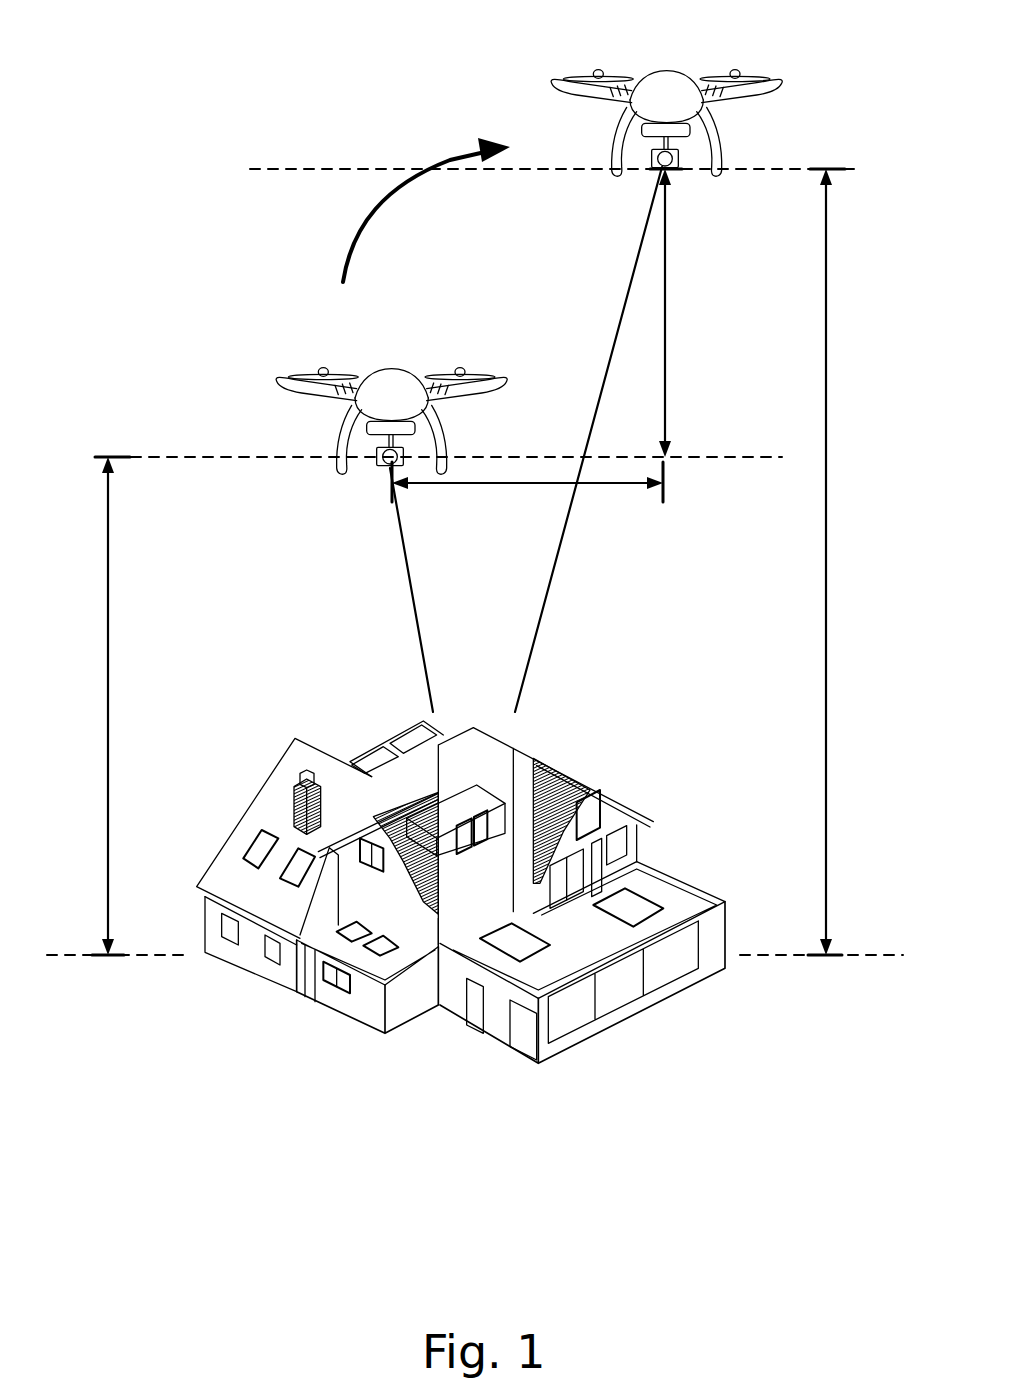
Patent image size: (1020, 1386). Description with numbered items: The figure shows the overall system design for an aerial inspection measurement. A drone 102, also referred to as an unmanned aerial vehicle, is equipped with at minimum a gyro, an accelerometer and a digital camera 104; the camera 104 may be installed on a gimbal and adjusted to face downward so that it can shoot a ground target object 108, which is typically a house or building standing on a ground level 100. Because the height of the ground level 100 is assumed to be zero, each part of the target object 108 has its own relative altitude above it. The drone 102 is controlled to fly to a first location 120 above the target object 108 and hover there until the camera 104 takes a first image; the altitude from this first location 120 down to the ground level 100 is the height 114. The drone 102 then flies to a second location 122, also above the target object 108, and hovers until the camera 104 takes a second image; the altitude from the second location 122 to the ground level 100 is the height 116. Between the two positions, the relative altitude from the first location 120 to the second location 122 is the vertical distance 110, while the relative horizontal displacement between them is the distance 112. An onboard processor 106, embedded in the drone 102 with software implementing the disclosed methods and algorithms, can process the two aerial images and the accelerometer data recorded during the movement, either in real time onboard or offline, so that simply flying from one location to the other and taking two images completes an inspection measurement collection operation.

The ground level 100 is at (877, 958).
The drone 102 is at (665, 82).
The digital camera 104 is at (652, 157).
The onboard processor 106 is at (643, 125).
The ground target object 108 is at (357, 1022).
The relative altitude 110 is at (672, 332).
The relative horizontal displacement 112 is at (463, 485).
The altitude of first location 114 is at (110, 698).
The altitude of second location 116 is at (820, 510).
The first location 120 is at (255, 390).
The second location 122 is at (525, 98).